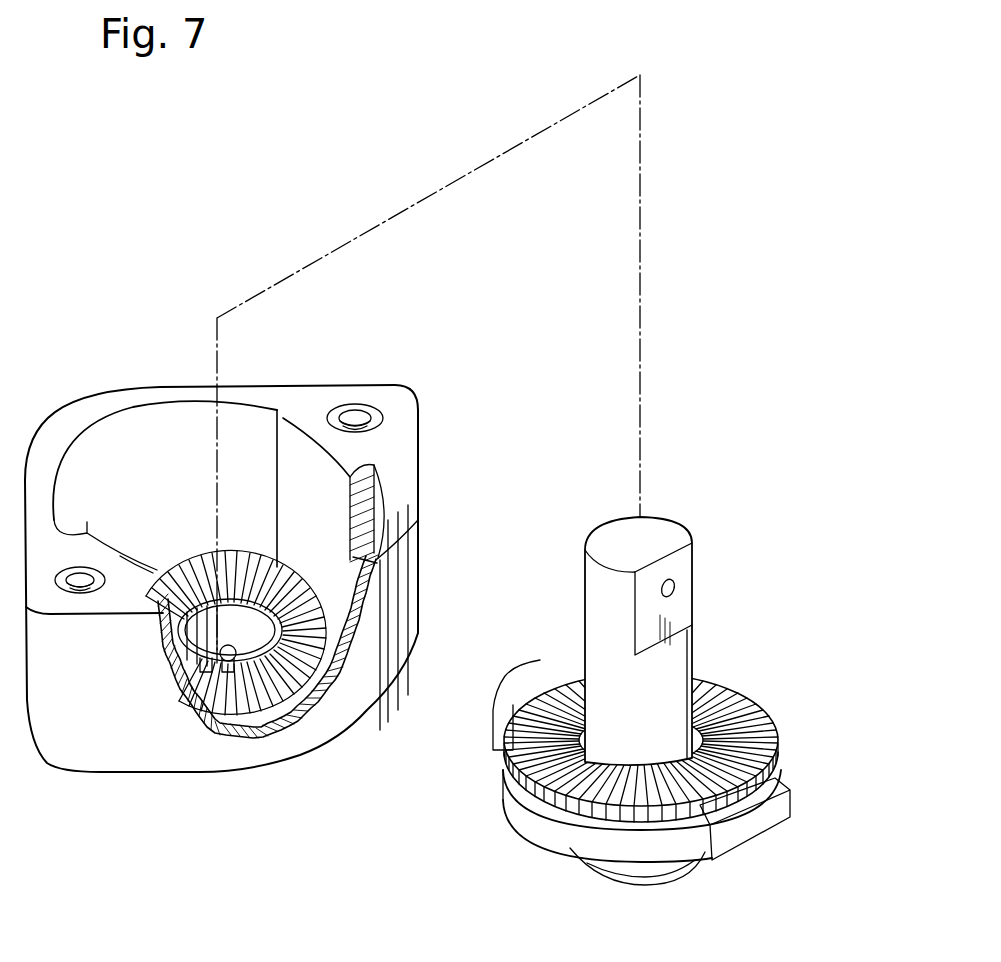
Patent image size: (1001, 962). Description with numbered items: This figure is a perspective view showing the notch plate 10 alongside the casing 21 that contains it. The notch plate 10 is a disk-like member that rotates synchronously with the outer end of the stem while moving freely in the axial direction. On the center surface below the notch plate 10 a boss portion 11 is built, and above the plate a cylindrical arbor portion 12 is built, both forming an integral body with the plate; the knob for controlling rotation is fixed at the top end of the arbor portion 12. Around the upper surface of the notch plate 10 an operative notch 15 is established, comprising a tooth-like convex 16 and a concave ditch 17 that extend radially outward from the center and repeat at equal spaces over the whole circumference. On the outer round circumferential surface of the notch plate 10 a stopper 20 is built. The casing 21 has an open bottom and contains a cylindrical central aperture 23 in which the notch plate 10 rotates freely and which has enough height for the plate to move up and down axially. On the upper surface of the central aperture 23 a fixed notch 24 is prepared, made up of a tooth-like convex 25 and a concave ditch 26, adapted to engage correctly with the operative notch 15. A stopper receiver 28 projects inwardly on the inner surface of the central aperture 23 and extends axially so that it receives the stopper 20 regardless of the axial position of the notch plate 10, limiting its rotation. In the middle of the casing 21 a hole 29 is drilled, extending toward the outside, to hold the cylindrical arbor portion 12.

The notch plate 10 is at (558, 830).
The boss portion 11 is at (632, 864).
The cylindrical arbor portion 12 is at (608, 592).
The operative notch 15 is at (708, 730).
The tooth-like convex 16 is at (740, 684).
The concave ditch 17 is at (709, 719).
The stopper 20 is at (508, 690).
The casing 21 is at (110, 730).
The central aperture 23 is at (135, 450).
The fixed notch 24 is at (237, 723).
The tooth-like convex 25 is at (272, 700).
The concave ditch 26 is at (268, 710).
The stopper receiver 28 is at (97, 545).
The hole 29 is at (207, 718).